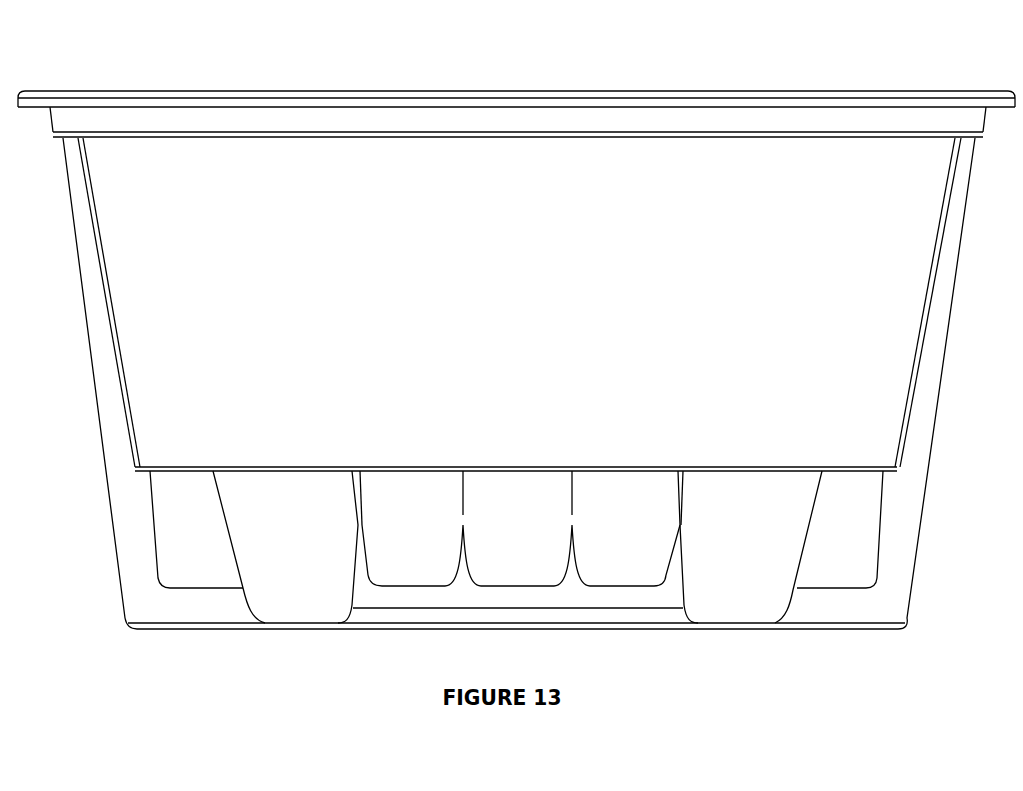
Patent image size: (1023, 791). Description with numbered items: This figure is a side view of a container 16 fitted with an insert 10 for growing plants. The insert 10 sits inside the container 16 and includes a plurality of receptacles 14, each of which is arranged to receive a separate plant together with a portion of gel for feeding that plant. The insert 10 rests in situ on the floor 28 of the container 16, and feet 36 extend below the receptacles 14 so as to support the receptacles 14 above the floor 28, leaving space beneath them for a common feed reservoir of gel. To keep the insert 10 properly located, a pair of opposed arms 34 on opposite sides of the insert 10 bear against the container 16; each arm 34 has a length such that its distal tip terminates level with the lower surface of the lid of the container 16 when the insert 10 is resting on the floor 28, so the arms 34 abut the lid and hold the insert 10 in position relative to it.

The insert 10 is at (308, 455).
The receptacles 14 is at (620, 523).
The container 16 is at (637, 86).
The floor 28 is at (922, 622).
The arm 34 is at (110, 307).
The feet 36 is at (277, 608).